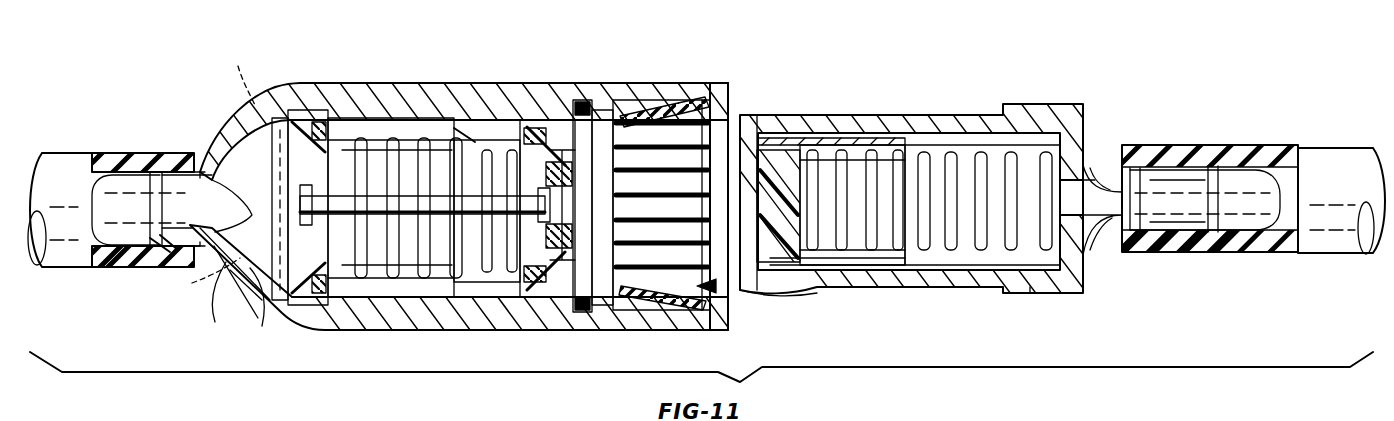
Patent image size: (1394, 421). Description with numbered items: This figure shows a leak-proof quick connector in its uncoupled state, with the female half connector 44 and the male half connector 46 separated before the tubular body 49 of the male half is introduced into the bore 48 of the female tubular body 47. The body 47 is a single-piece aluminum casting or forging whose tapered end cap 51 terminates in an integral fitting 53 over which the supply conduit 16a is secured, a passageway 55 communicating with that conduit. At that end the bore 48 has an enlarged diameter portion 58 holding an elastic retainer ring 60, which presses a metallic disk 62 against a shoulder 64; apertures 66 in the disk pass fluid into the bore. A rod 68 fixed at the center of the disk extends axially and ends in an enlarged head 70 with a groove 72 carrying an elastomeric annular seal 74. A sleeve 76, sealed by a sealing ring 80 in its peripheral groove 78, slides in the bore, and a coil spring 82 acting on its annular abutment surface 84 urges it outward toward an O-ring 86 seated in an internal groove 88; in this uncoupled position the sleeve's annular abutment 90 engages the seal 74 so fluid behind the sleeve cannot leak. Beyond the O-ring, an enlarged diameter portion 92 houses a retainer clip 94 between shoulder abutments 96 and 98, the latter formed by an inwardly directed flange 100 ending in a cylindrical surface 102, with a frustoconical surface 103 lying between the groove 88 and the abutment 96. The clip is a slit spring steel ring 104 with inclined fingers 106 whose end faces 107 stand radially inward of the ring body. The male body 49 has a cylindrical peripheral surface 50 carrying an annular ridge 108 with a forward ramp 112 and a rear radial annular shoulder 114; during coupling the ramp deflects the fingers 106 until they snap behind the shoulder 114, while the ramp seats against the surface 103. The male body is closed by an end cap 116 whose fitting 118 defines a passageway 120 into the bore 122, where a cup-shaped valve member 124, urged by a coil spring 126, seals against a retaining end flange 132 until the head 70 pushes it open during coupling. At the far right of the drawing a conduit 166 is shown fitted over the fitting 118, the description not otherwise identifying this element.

The supply conduit 16a is at (66, 160).
The female half connector 44 is at (535, 184).
The male half connector 46 is at (966, 169).
The tubular body of female member 47 is at (360, 95).
The bore of female tubular body 48 is at (332, 110).
The tubular body of male member 49 is at (986, 112).
The cylindrical peripheral surface 50 is at (772, 115).
The end cap 51 is at (222, 175).
The fitting 53 is at (150, 262).
The passageway 55 is at (205, 160).
The enlarged diameter portion of bore 58 is at (272, 322).
The retainer ring 60 is at (255, 300).
The metallic disk 62 is at (258, 225).
The shoulder 64 is at (262, 280).
The apertures 66 is at (205, 172).
The rod 68 is at (412, 195).
The enlarged head 70 is at (620, 182).
The groove 72 is at (548, 132).
The annular seal 74 is at (510, 228).
The sleeve 76 is at (445, 302).
The peripheral groove 78 is at (515, 295).
The sealing ring 80 is at (542, 300).
The coil spring 82 is at (292, 306).
The annular abutment surface 84 is at (470, 135).
The O-ring 86 is at (604, 306).
The internal groove 88 is at (558, 98).
The annular abutment 90 is at (478, 300).
The enlarged diameter portion 92 is at (655, 100).
The retainer clip 94 is at (742, 280).
The annular shoulder abutment 96 is at (640, 138).
The annular shoulder abutment 98 is at (714, 100).
The inwardly directed flange 100 is at (703, 330).
The cylindrical surface 102 is at (712, 245).
The frustoconical surface 103 is at (628, 255).
The spring steel ring 104 is at (636, 308).
The fingers 106 is at (638, 96).
The end face 107 is at (632, 215).
The annular ridge 108 is at (800, 125).
The ramp 112 is at (792, 120).
The radial annular shoulder 114 is at (820, 128).
The end cap 116 is at (1092, 140).
The fitting 118 is at (1192, 145).
The passageway 120 is at (1105, 175).
The bore 122 is at (940, 270).
The valve member 124 is at (870, 285).
The coil spring 126 is at (1034, 296).
The retaining end flange 132 is at (832, 275).
The hose 166 is at (1335, 150).